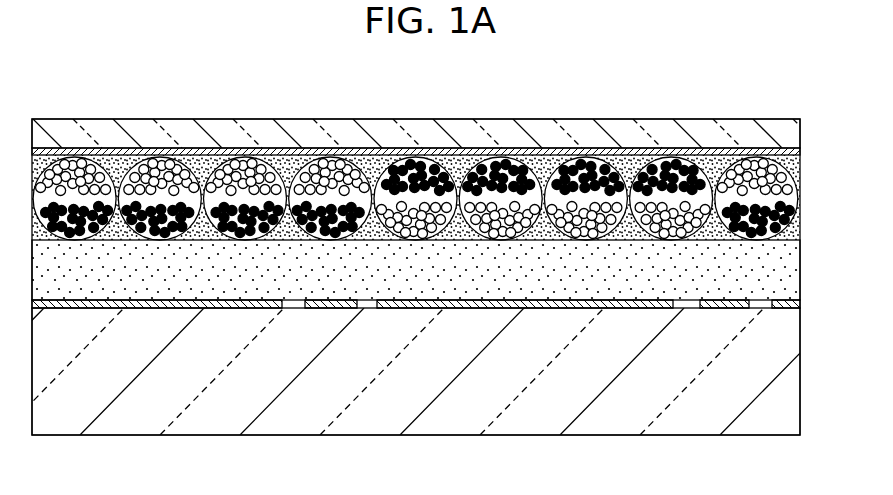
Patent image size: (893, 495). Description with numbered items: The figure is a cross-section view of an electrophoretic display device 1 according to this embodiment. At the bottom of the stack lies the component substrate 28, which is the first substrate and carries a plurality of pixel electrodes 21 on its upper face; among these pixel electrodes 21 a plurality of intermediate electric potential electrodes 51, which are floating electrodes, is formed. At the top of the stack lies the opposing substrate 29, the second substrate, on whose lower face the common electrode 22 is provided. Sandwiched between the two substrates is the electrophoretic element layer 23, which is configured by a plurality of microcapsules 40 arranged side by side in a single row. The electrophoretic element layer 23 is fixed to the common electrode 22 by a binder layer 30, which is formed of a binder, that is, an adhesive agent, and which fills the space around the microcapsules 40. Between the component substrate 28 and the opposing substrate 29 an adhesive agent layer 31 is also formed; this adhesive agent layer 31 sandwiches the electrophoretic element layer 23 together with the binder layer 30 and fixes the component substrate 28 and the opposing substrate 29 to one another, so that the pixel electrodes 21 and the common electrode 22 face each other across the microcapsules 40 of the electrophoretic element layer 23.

The electrophoretic display device 1 is at (769, 95).
The pixel electrode 21 is at (800, 303).
The common electrode 22 is at (792, 151).
The electrophoretic element layer 23 is at (448, 195).
The component substrate 28 is at (798, 373).
The opposing substrate 29 is at (794, 128).
The binder layer 30 is at (794, 158).
The adhesive agent layer 31 is at (794, 253).
The microcapsule 40 is at (794, 226).
The intermediate electric potential electrode 51 is at (718, 308).